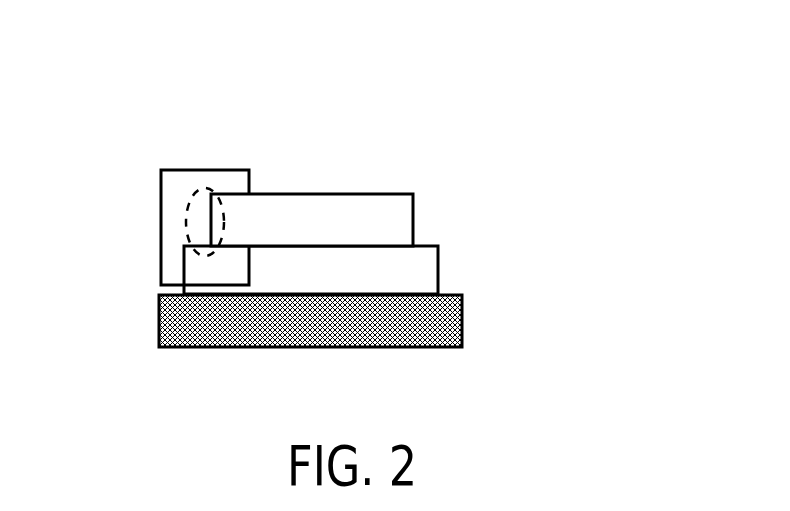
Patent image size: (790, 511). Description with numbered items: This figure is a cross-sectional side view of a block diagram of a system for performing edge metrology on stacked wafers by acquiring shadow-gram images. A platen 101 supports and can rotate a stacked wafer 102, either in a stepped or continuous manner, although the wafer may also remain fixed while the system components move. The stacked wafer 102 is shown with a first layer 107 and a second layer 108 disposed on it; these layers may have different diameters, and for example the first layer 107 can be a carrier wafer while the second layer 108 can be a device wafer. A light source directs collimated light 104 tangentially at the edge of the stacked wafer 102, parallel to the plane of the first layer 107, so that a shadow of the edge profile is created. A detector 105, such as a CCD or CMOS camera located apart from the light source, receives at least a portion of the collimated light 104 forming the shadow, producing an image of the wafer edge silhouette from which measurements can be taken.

The platen 101 is at (400, 347).
The stacked wafer 102 is at (367, 222).
The collimated light 104 is at (197, 230).
The detector 105 is at (233, 183).
The first layer 107 is at (428, 255).
The second layer 108 is at (402, 220).